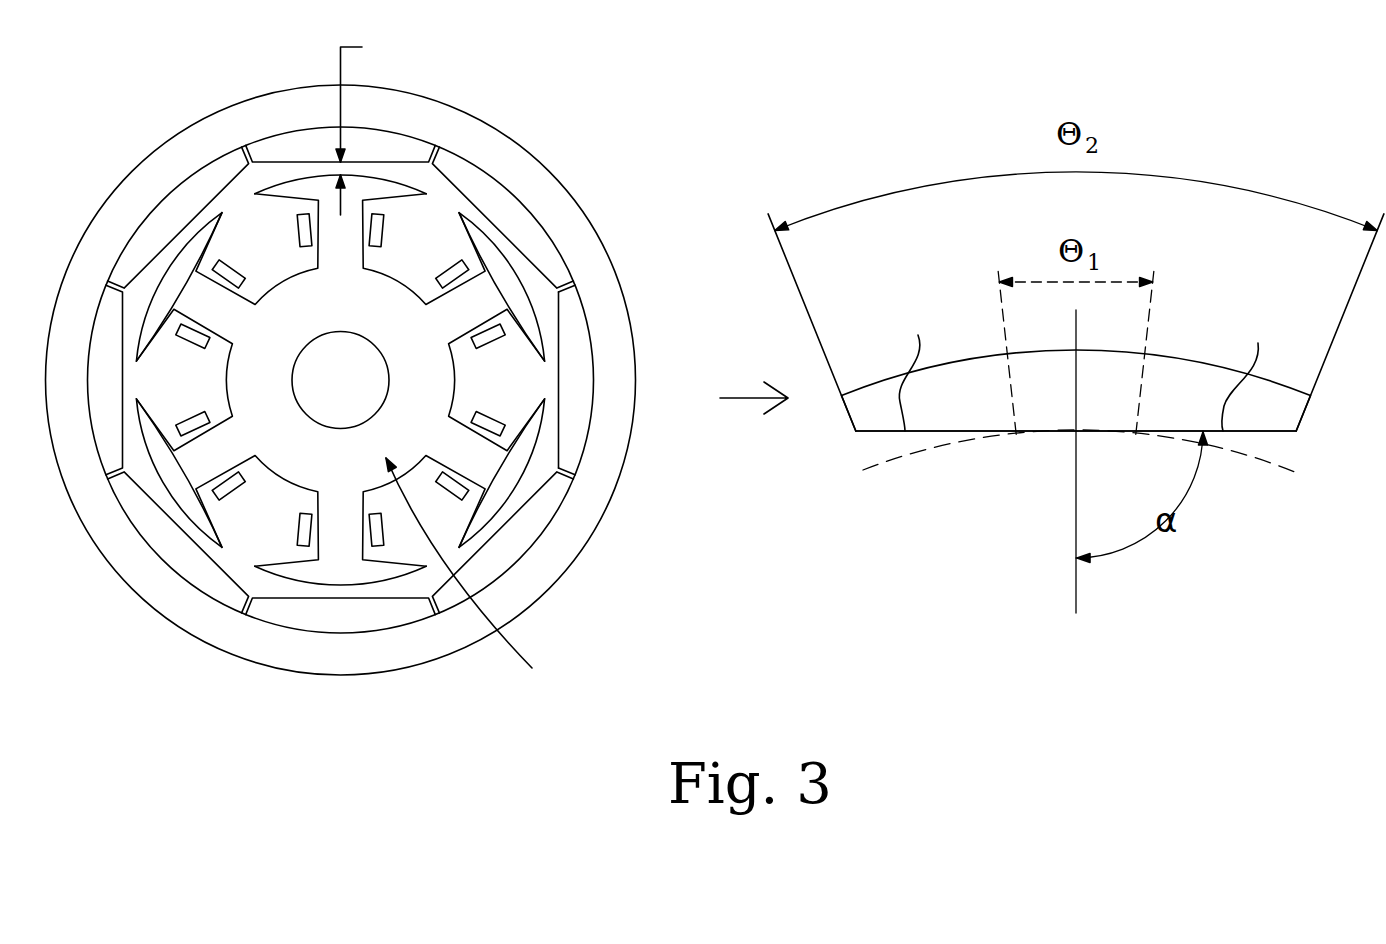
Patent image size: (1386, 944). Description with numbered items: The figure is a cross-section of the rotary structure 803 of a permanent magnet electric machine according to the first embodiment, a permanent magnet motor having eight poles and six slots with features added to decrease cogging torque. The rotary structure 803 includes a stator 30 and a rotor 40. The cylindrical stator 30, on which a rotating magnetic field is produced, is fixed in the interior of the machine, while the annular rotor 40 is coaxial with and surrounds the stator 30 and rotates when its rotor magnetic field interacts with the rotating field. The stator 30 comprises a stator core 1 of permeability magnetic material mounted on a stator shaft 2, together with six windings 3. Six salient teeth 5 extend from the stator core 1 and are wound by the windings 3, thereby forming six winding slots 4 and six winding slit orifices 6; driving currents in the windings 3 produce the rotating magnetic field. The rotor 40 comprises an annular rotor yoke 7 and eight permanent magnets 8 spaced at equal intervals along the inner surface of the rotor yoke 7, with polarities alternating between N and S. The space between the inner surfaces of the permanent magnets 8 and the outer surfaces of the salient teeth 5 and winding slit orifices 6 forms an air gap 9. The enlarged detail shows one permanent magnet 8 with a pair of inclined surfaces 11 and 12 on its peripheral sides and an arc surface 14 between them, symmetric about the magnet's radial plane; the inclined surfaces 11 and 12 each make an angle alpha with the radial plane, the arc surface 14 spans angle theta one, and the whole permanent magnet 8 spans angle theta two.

The rotary structure 803 is at (165, 86).
The rotor 40 is at (519, 119).
The rotor yoke 7 is at (341, 380).
The permanent magnet 8 is at (708, 379).
The air gap 9 is at (562, 602).
The stator core 1 is at (340, 449).
The stator shaft 2 is at (340, 380).
The winding 3 is at (380, 230).
The winding slot 4 is at (257, 249).
The salient tooth 5 is at (345, 565).
The winding slit orifice 6 is at (243, 558).
The inclined surface 11 is at (561, 433).
The inclined surface 12 is at (561, 331).
The arc surface 14 is at (1048, 432).
The stator 30 is at (482, 578).